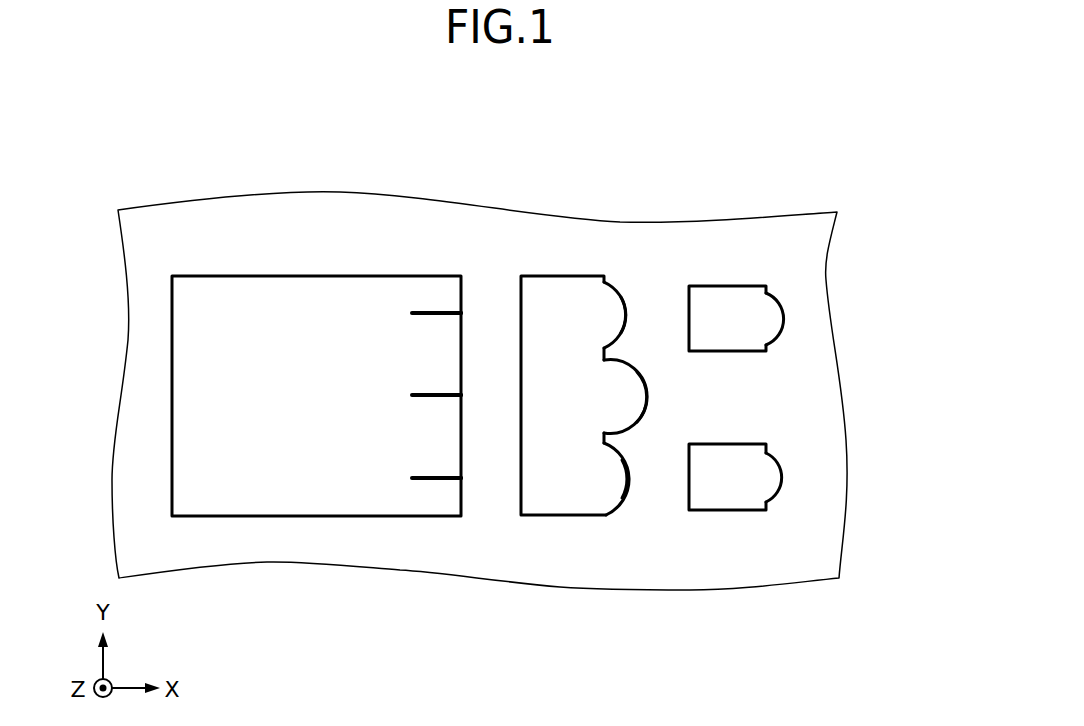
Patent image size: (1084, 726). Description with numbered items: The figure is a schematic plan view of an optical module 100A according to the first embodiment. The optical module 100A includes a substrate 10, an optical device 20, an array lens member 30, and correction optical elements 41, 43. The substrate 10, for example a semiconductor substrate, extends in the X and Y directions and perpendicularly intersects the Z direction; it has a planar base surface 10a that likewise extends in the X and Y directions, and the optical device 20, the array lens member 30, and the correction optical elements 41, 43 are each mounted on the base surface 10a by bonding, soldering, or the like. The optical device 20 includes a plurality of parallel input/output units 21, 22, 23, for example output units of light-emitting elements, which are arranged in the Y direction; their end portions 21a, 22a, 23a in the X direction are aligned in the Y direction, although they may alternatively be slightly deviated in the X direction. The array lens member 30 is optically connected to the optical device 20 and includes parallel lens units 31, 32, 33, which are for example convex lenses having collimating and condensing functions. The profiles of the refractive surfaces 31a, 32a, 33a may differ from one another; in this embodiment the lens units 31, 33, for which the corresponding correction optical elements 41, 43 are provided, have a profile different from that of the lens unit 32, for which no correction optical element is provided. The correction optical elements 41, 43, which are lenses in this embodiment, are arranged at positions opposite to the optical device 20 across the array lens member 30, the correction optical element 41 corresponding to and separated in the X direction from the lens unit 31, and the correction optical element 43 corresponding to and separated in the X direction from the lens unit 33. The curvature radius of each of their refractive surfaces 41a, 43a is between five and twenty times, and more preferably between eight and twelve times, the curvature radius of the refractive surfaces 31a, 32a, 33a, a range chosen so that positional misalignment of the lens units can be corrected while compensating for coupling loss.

The optical module 100A is at (768, 134).
The substrate 10 is at (511, 391).
The base surface 10a is at (810, 240).
The optical device 20 is at (239, 268).
The input/output unit 21 is at (434, 311).
The end portion 21a is at (462, 311).
The input/output unit 22 is at (418, 398).
The end portion 22a is at (461, 396).
The input/output unit 23 is at (427, 481).
The end portion 23a is at (461, 479).
The array lens member 30 is at (533, 268).
The lens unit 31 is at (614, 312).
The refractive surface 31a is at (628, 318).
The lens unit 32 is at (625, 395).
The refractive surface 32a is at (645, 385).
The lens unit 33 is at (611, 478).
The refractive surface 33a is at (630, 478).
The correction optical element 41 is at (784, 302).
The refractive surface 41a is at (782, 318).
The correction optical element 43 is at (785, 494).
The refractive surface 43a is at (782, 476).